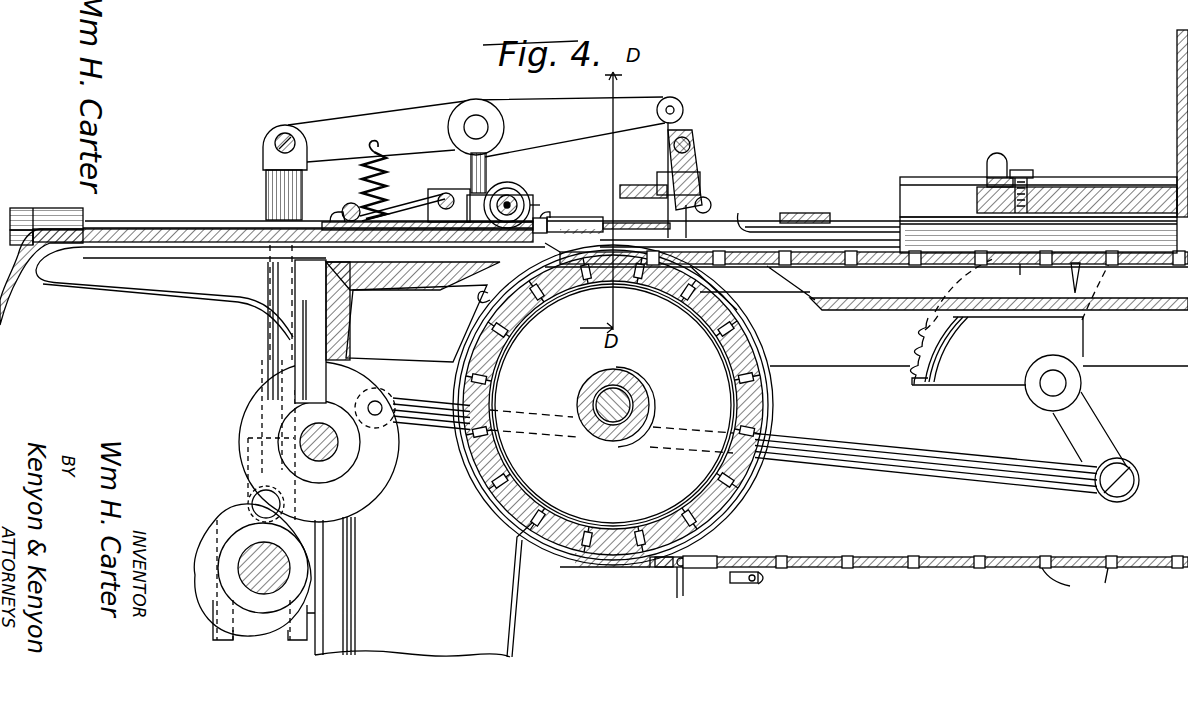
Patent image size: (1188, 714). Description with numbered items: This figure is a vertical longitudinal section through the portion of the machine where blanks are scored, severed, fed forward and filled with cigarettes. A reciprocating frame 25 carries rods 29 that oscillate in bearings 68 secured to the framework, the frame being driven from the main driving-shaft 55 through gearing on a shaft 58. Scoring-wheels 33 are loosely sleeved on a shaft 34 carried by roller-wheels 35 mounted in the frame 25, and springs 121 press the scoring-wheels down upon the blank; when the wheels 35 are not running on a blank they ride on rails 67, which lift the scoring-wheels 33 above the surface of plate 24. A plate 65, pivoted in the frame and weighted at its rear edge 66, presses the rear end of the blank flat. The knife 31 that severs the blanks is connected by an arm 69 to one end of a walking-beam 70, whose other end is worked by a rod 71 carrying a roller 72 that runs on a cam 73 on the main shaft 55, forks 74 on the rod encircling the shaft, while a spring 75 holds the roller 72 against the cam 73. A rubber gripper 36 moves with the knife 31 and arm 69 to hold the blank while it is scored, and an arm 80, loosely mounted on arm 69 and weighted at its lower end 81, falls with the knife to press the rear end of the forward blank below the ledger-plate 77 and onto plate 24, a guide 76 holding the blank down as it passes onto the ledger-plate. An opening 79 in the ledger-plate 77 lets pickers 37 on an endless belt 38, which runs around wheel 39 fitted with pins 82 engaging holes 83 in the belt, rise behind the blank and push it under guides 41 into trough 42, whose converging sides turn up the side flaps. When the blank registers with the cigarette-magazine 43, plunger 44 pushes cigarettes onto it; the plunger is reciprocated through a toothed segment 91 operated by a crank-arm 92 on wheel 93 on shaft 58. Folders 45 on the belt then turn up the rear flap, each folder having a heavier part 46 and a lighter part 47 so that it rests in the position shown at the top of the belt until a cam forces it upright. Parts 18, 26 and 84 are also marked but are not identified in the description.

The bed plate 18 is at (548, 244).
The plate 24 is at (372, 244).
The frame 25 is at (436, 206).
The base plate 26 is at (336, 212).
The rods 29 is at (153, 222).
The knife 31 is at (695, 168).
The scoring-wheels 33 is at (516, 200).
The shaft 34 is at (506, 195).
The roller-wheels 35 is at (535, 210).
The rubber gripper 36 is at (620, 190).
The pickers 37 is at (477, 298).
The endless belt 38 is at (950, 570).
The wheel 39 is at (776, 409).
The guides 41 is at (745, 216).
The trough 42 is at (900, 222).
The cigarette-magazine 43 is at (1177, 90).
The plunger 44 is at (1063, 187).
The folders 45 is at (696, 580).
The part of folder 46 is at (1075, 290).
The part of folder 47 is at (680, 597).
The main driving-shaft 55 is at (250, 548).
The shaft 58 is at (340, 443).
The plate 65 is at (425, 203).
The rear edge 66 is at (351, 203).
The rails 67 is at (208, 228).
The bearings 68 is at (86, 209).
The arm 69 is at (684, 114).
The walking-beam 70 is at (476, 129).
The rod 71 is at (268, 338).
The roller 72 is at (256, 497).
The cam 73 is at (205, 548).
The forks 74 is at (215, 632).
The spring 75 is at (368, 156).
The guide 76 is at (558, 228).
The ledger-plate 77 is at (620, 224).
The opening 79 is at (600, 231).
The arm 80 is at (702, 185).
The weighted lower end 81 is at (712, 203).
The projecting pins 82 is at (745, 344).
The holes 83 is at (1170, 574).
The hub pivot 84 is at (475, 126).
The toothed segment 91 is at (1018, 362).
The crank-arm 92 is at (918, 462).
The wheel 93 is at (379, 396).
The springs 121 is at (449, 194).